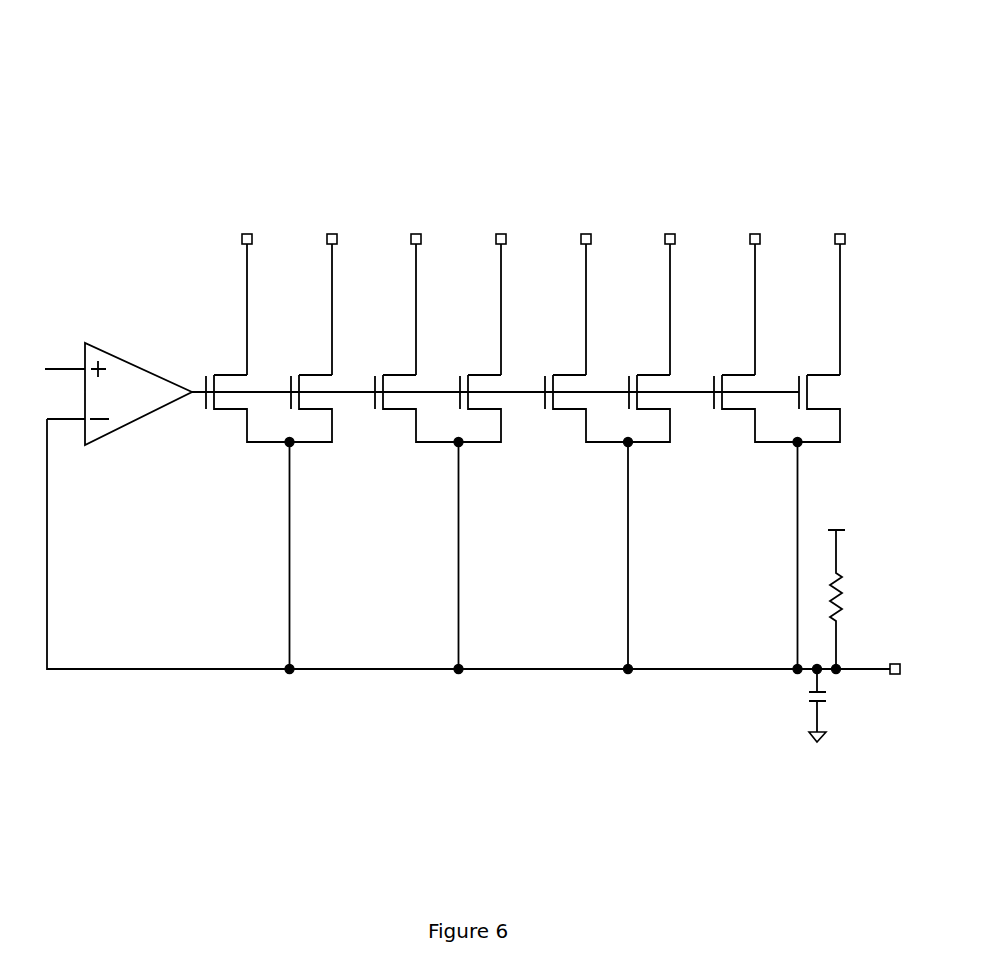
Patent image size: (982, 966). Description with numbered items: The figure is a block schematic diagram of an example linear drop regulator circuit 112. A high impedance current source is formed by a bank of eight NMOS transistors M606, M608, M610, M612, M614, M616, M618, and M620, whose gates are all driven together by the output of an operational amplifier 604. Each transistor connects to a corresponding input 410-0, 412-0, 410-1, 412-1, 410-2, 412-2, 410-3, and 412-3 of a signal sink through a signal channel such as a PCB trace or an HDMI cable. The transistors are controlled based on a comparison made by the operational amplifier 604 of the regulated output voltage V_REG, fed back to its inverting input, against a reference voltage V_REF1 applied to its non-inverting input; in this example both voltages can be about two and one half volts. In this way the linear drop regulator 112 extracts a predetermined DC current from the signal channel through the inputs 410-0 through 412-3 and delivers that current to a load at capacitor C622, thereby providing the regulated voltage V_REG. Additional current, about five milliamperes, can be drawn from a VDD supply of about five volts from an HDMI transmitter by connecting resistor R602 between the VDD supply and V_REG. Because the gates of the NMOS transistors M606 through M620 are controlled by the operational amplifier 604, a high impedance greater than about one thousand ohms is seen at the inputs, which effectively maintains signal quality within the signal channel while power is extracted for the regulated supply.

The linear drop regulator circuit 112 is at (132, 37).
The operational amplifier 604 is at (146, 401).
The input 410-0 is at (247, 292).
The input 412-0 is at (332, 292).
The input 410-1 is at (416, 292).
The input 412-1 is at (501, 292).
The input 410-2 is at (586, 292).
The input 412-2 is at (670, 292).
The input 410-3 is at (755, 292).
The input 412-3 is at (840, 292).
The NMOS transistor M606 is at (237, 397).
The NMOS transistor M608 is at (299, 394).
The NMOS transistor M610 is at (406, 397).
The NMOS transistor M612 is at (468, 394).
The NMOS transistor M614 is at (576, 397).
The NMOS transistor M616 is at (637, 394).
The NMOS transistor M618 is at (745, 397).
The NMOS transistor M620 is at (807, 394).
The resistor R602 is at (841, 584).
The capacitor C622 is at (790, 705).